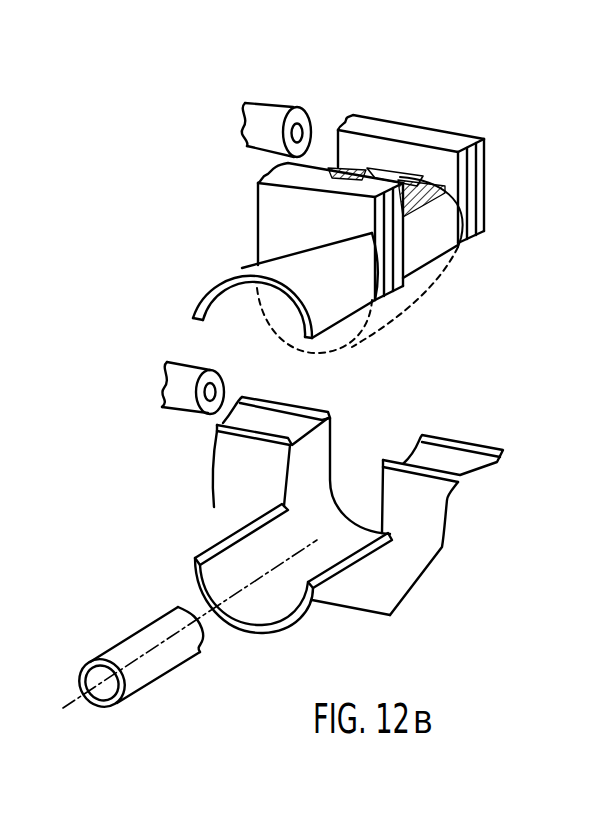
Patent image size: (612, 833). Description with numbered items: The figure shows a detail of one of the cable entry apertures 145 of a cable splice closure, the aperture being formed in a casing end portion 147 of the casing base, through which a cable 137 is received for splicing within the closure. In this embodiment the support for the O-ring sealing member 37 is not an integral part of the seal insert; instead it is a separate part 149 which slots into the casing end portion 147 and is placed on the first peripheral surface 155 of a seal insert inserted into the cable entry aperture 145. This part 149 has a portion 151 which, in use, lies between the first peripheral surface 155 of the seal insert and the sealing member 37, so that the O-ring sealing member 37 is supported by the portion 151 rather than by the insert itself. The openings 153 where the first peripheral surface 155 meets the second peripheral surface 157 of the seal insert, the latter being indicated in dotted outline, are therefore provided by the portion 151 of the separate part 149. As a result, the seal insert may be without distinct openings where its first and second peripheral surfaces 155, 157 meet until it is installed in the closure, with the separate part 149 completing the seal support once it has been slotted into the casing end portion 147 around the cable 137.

The sealing member 37 is at (271, 117).
The cable 137 is at (172, 655).
The cable entry aperture 145 is at (287, 593).
The casing end portion 147 is at (380, 590).
The part 149 is at (380, 300).
The portion 151 is at (390, 172).
The openings 153 is at (415, 224).
The first peripheral surface 155 is at (468, 205).
The second peripheral surface 157 is at (435, 275).